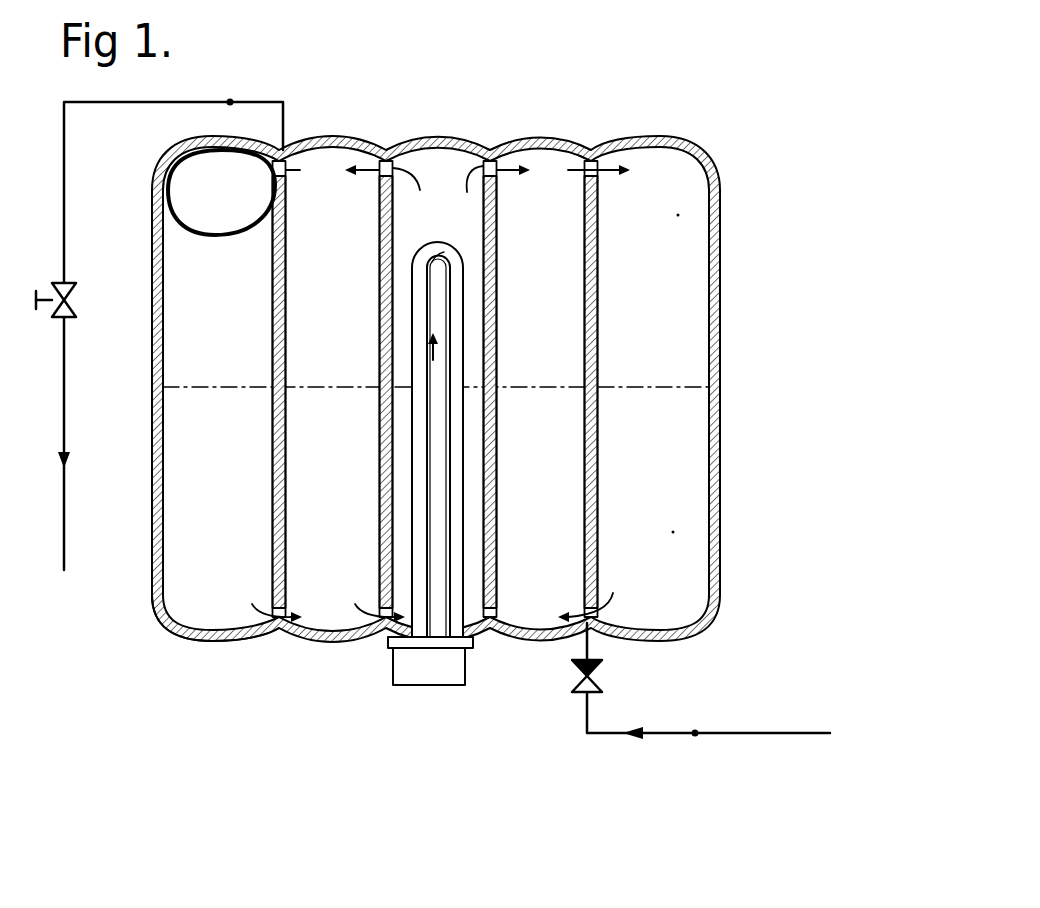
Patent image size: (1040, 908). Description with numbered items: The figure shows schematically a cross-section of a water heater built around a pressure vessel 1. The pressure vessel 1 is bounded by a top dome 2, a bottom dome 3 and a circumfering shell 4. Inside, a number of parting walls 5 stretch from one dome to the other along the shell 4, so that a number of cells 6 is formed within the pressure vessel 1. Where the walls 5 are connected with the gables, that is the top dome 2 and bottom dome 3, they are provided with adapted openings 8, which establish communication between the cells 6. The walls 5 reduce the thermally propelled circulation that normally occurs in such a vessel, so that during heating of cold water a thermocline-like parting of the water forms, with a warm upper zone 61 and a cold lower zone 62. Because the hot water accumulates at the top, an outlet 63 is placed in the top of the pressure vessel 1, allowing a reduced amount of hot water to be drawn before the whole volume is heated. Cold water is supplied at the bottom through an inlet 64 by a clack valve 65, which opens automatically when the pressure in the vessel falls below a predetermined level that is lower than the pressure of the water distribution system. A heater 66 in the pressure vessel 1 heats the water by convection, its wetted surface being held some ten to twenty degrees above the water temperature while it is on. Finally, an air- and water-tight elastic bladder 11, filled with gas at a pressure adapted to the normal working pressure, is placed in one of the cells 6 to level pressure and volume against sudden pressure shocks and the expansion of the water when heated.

The pressure vessel 1 is at (760, 135).
The top dome 2 is at (657, 140).
The bottom dome 3 is at (217, 637).
The circumfering shell 4 is at (720, 313).
The parting walls 5 is at (490, 477).
The cells 6 is at (333, 570).
The openings 8 is at (410, 145).
The elastic bladder 11 is at (208, 185).
The warm upper zone 61 is at (678, 215).
The cold lower zone 62 is at (673, 532).
The outlet 63 is at (230, 102).
The inlet 64 is at (695, 733).
The clack valve 65 is at (600, 678).
The heater 66 is at (418, 590).